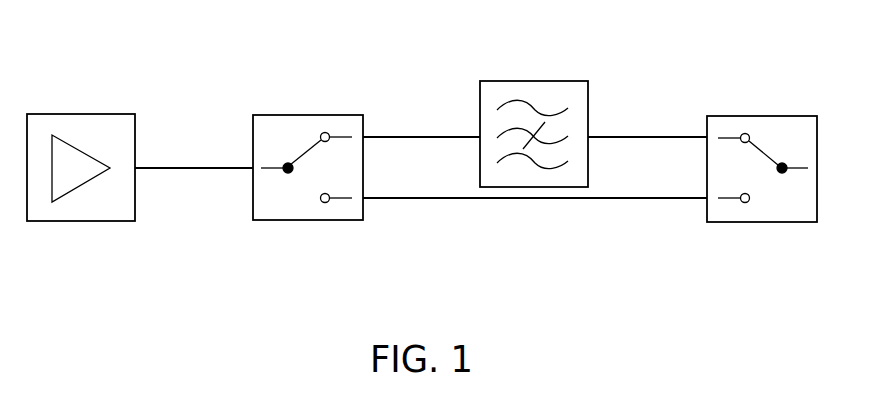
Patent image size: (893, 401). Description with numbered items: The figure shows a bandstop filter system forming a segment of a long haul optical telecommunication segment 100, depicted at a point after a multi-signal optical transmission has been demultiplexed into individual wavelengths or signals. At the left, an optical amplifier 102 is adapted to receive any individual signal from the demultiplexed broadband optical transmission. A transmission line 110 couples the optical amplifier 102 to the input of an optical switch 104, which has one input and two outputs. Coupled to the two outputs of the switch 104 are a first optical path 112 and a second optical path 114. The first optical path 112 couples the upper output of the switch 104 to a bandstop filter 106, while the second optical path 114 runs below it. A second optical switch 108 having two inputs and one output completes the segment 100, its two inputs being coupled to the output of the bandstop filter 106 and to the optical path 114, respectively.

The long haul optical telecommunication segment 100 is at (115, 32).
The optical amplifier 102 is at (82, 113).
The optical switch 104 is at (310, 113).
The bandstop filter 106 is at (550, 80).
The second optical switch 108 is at (783, 113).
The transmission line 110 is at (195, 169).
The first optical path 112 is at (401, 136).
The second optical path 114 is at (430, 199).